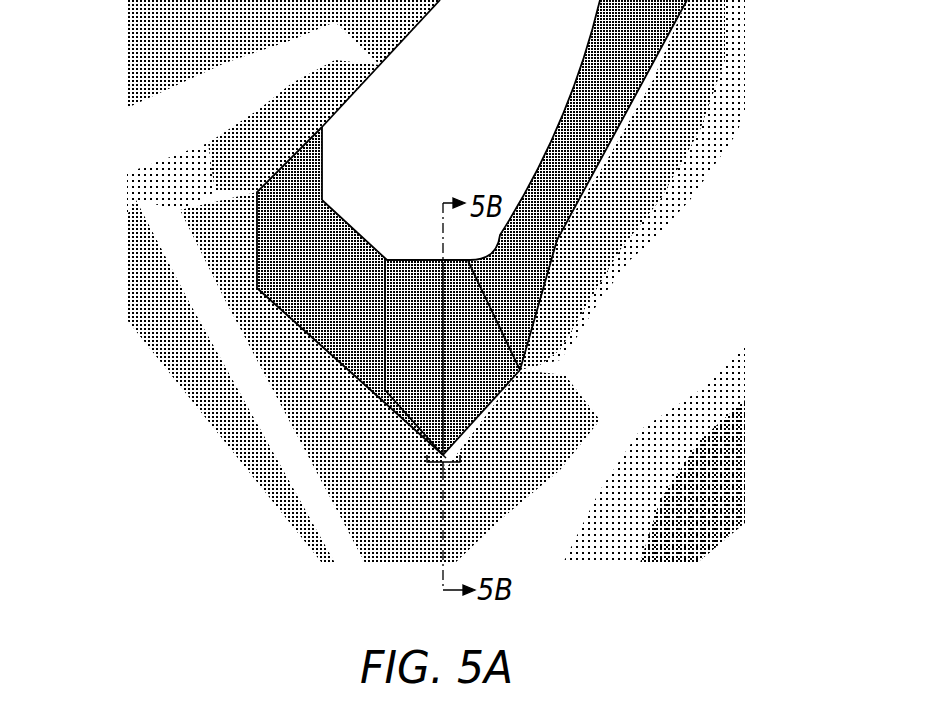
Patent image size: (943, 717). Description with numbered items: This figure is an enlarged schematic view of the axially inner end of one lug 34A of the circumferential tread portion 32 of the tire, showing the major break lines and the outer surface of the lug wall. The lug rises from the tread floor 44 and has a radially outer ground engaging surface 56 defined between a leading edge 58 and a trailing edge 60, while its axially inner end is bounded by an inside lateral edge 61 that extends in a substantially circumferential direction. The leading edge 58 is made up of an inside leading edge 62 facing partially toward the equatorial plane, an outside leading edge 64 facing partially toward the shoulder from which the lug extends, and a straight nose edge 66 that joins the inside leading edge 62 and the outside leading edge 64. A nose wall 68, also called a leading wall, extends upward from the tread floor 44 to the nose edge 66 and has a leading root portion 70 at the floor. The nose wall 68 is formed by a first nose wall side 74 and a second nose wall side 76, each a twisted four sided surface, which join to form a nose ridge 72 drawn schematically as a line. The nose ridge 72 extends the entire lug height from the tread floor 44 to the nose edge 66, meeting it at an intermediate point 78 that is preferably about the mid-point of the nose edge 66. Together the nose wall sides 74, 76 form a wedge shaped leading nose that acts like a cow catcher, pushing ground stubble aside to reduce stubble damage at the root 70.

The circumferential tread portion 32 is at (660, 185).
The lug 34A is at (513, 68).
The tread floor 44 is at (568, 500).
The radially outer ground engaging surface 56 is at (468, 87).
The leading edge 58 is at (428, 227).
The trailing edge 60 is at (367, 72).
The inside lateral edge 61 is at (322, 180).
The inside leading edge 62 is at (350, 237).
The outside leading edge 64 is at (530, 153).
The nose edge 66 is at (463, 263).
The nose wall 68 is at (453, 361).
The leading root portion 70 is at (433, 433).
The nose ridge 72 is at (445, 397).
The first nose wall side 74 is at (475, 350).
The second nose wall side 76 is at (410, 373).
The intermediate point 78 is at (442, 261).